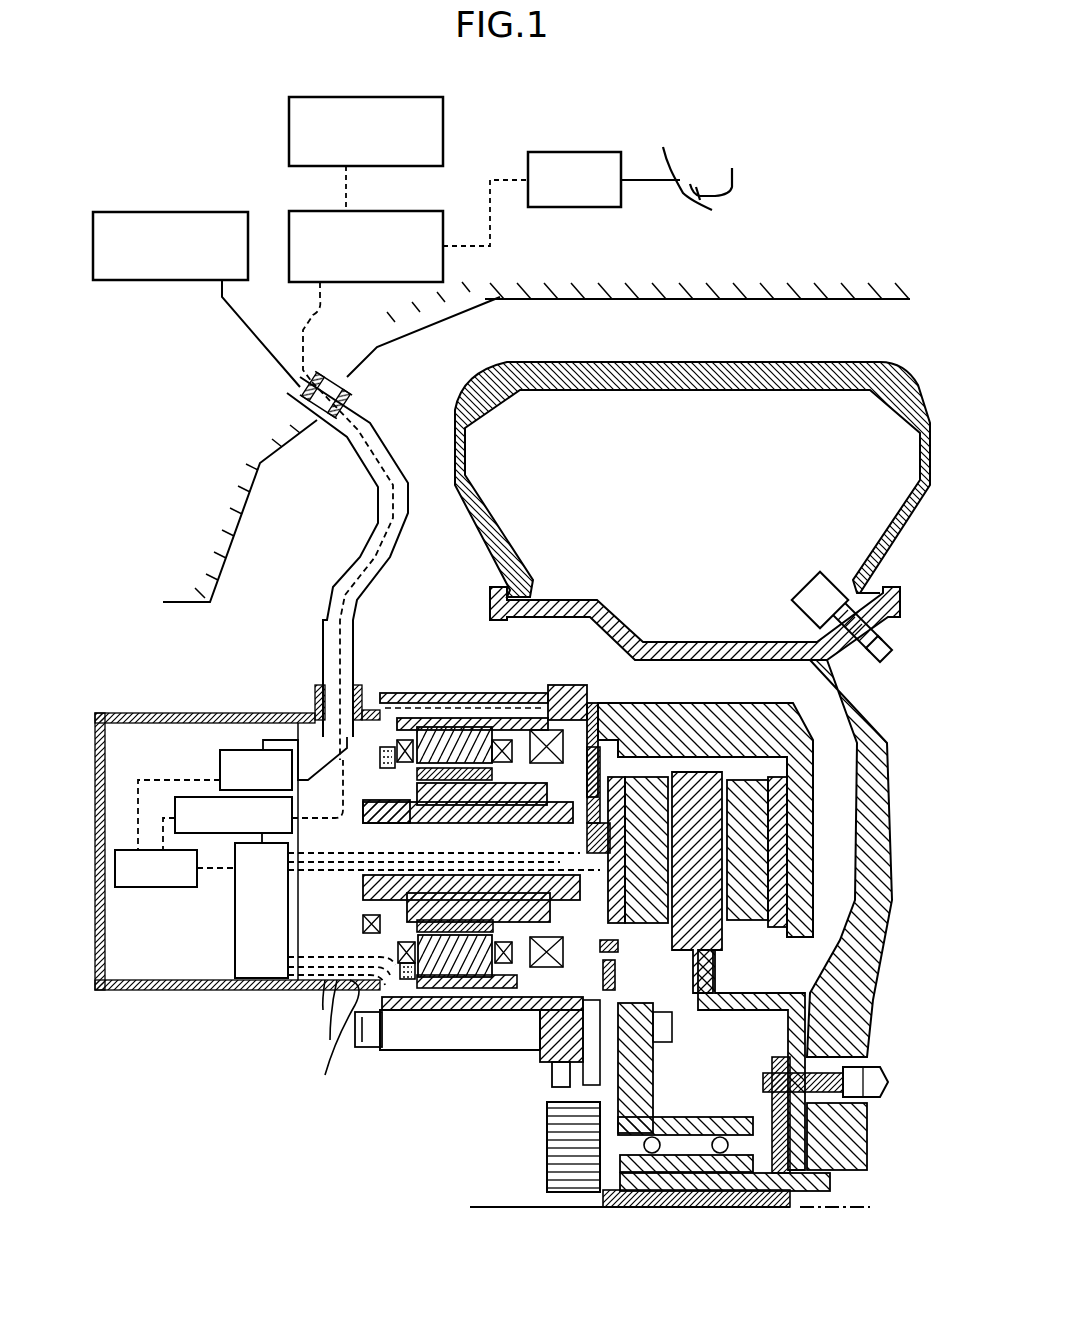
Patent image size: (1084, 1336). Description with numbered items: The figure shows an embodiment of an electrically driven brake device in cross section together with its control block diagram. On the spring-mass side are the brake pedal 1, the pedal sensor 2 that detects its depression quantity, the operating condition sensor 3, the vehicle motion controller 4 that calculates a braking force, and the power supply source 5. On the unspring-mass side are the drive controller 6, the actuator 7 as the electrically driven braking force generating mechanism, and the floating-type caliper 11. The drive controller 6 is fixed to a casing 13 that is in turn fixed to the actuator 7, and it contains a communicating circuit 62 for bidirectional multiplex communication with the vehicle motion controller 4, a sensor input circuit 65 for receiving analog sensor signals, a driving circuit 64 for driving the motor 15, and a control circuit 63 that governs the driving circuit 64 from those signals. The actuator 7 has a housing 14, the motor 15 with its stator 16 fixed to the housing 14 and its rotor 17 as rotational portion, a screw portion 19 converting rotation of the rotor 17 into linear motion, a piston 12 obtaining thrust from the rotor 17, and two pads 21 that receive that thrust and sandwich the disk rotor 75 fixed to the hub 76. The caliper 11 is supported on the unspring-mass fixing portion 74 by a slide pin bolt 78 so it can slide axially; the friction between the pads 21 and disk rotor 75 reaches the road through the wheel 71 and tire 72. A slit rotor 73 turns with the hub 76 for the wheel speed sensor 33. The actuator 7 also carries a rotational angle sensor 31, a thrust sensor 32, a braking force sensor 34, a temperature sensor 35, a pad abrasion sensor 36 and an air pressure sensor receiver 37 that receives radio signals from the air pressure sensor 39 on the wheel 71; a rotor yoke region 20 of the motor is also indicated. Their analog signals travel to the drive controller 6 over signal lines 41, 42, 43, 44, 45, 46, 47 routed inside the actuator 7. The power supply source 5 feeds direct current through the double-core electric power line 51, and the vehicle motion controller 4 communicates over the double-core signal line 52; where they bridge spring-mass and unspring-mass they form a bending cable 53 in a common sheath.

The brake pedal 1 is at (699, 173).
The pedal sensor 2 is at (540, 152).
The operating condition sensor 3 is at (289, 119).
The vehicle motion controller 4 is at (298, 210).
The power supply source 5 is at (141, 212).
The drive controller 6 is at (163, 955).
The actuator 7 is at (486, 736).
The caliper 11 is at (718, 703).
The piston 12 is at (482, 824).
The casing 13 is at (232, 712).
The housing 14 is at (598, 703).
The motor 15 is at (438, 716).
The stator 16 is at (464, 727).
The rotor 17 is at (378, 823).
The screw portion 19 is at (448, 806).
The rotor yoke 20 is at (526, 716).
The pads 21 is at (650, 948).
The rotational angle sensor 31 is at (384, 745).
The thrust sensor 32 is at (587, 838).
The wheel speed sensor 33 is at (545, 1068).
The braking force sensor 34 is at (600, 1006).
The temperature sensor 35 is at (408, 980).
The pad abrasion sensor 36 is at (618, 948).
The air pressure sensor receiver 37 is at (558, 685).
The air pressure sensor 39 is at (808, 590).
The signal line 41 is at (380, 862).
The signal line 42 is at (353, 928).
The signal line 43 is at (307, 1009).
The signal line 44 is at (313, 1024).
The signal line 45 is at (324, 1039).
The signal line 46 is at (326, 875).
The signal line 47 is at (317, 804).
The electric power line 51 is at (246, 318).
The signal line 52 is at (323, 312).
The bending cable 53 is at (370, 412).
The communicating circuit 62 is at (175, 810).
The control circuit 63 is at (130, 887).
The driving circuit 64 is at (218, 762).
The sensor input circuit 65 is at (235, 912).
The wheel 71 is at (703, 640).
The tire 72 is at (662, 390).
The slit rotor 73 is at (545, 1108).
The unspring-mass fixing portion 74 is at (660, 1116).
The disk rotor 75 is at (722, 950).
The hub 76 is at (833, 1182).
The slide pin bolt 78 is at (665, 1045).